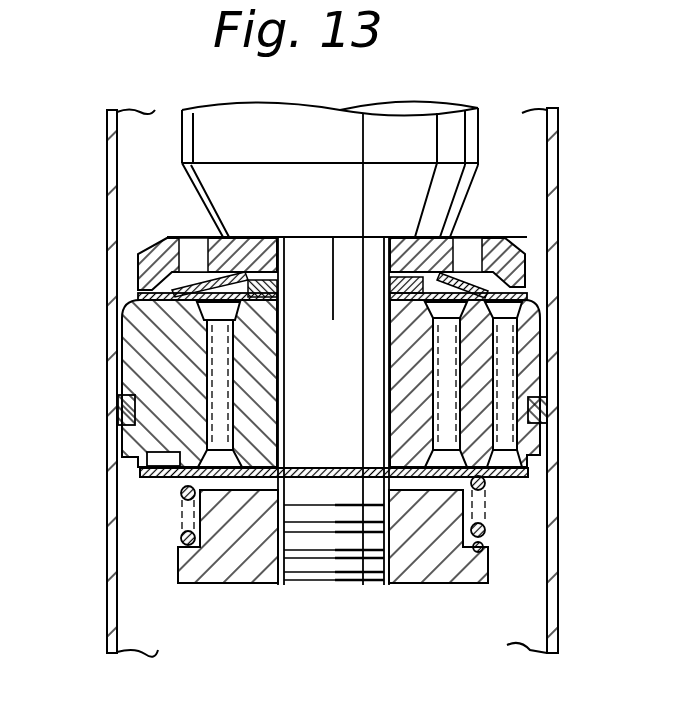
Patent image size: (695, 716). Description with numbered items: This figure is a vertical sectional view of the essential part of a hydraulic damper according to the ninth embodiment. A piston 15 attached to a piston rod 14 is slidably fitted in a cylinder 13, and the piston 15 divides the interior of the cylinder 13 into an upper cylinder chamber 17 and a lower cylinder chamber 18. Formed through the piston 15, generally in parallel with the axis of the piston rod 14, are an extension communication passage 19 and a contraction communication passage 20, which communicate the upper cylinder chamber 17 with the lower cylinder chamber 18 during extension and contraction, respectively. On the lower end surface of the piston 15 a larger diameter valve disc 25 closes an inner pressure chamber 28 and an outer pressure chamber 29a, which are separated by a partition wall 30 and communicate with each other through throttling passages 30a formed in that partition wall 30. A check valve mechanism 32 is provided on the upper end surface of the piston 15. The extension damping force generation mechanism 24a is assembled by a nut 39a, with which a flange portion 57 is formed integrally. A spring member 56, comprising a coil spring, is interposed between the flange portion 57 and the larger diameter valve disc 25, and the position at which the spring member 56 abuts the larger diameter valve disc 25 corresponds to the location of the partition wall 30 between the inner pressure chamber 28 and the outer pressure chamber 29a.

The cylinder 13 is at (553, 195).
The piston rod 14 is at (470, 152).
The piston 15 is at (450, 390).
The upper cylinder chamber 17 is at (528, 128).
The lower cylinder chamber 18 is at (525, 655).
The extension communication passage 19 is at (500, 378).
The contraction communication passage 20 is at (505, 330).
The extension damping force generation mechanism 24a is at (498, 547).
The larger diameter valve disc 25 is at (530, 460).
The inner pressure chamber 28 is at (200, 455).
The outer pressure chamber 29a is at (150, 463).
The partition wall 30 is at (148, 460).
The throttling passages 30a is at (183, 478).
The check valve mechanism 32 is at (152, 255).
The nut 39a is at (473, 583).
The spring member 56 is at (487, 533).
The flange portion 57 is at (490, 560).